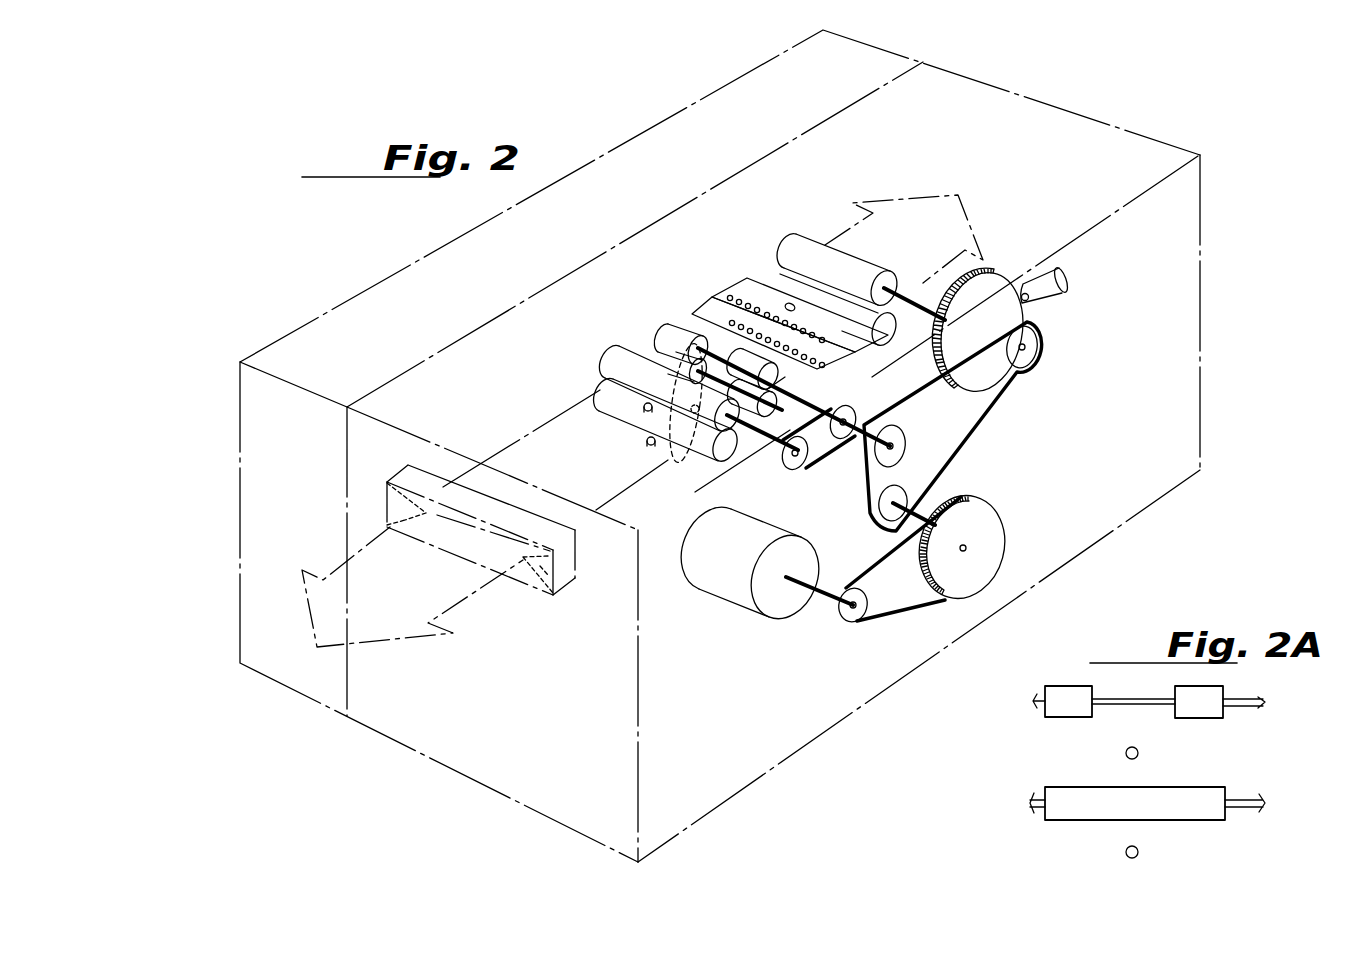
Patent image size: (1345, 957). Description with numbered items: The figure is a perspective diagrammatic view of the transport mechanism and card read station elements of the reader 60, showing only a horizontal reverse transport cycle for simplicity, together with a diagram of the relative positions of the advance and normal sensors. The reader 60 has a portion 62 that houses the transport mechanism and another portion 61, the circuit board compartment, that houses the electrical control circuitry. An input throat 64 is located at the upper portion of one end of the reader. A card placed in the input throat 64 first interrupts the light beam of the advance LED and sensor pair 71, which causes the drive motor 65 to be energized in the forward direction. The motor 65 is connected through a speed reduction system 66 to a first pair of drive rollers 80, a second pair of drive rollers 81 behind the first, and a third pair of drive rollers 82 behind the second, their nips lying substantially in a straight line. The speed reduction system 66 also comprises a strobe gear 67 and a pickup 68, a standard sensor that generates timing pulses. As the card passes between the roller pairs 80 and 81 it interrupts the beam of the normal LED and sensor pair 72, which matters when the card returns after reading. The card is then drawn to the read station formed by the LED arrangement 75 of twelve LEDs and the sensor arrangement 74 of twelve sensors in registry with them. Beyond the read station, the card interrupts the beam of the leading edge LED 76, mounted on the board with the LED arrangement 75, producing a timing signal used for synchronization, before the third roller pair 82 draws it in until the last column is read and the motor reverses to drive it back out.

In FIG. 2, the reader 60 is at (672, 98).
In FIG. 2, the circuit board compartment 61 is at (475, 295).
In FIG. 2, the transport mechanism portion 62 is at (1160, 406).
In FIG. 2, the input throat 64 is at (563, 575).
In FIG. 2, the drive motor 65 is at (727, 577).
In FIG. 2, the speed reduction system 66 is at (987, 530).
In FIG. 2, the strobe gear 67 is at (1012, 313).
In FIG. 2, the pickup 68 is at (1057, 277).
In FIG. 2, the advance LED and sensor pair 71 is at (643, 442).
In FIG. 2A, the advance LED and sensor pair 71 is at (1138, 848).
In FIG. 2, the normal LED and sensor pair 72 is at (688, 425).
In FIG. 2A, the normal LED and sensor pair 72 is at (1125, 753).
In FIG. 2, the sensor arrangement 74 is at (720, 317).
In FIG. 2, the LED arrangement 75 is at (742, 288).
In FIG. 2, the leading edge LED 76 is at (790, 307).
In FIG. 2, the first pair of drive rollers 80 is at (618, 358).
In FIG. 2A, the first pair of drive rollers 80 is at (1067, 798).
In FIG. 2, the second pair of drive rollers 81 is at (662, 330).
In FIG. 2A, the second pair of drive rollers 81 is at (1213, 707).
In FIG. 2, the third pair of drive rollers 82 is at (793, 242).